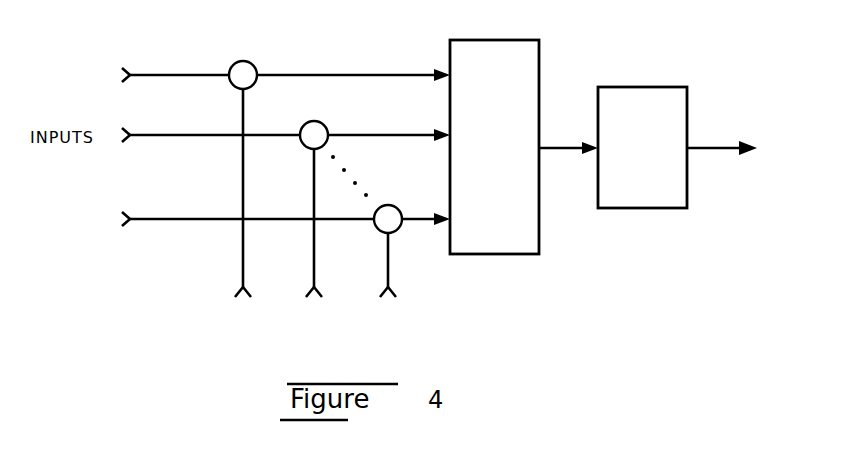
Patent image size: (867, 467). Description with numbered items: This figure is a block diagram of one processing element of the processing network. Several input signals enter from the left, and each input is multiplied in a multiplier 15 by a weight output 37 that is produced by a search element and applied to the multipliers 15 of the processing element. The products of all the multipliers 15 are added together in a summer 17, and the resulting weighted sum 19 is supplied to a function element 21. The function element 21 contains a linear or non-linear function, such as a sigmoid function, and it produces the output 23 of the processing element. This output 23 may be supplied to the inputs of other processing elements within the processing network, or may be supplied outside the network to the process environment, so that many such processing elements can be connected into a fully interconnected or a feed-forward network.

The multiplier 15 is at (250, 62).
The summer 17 is at (532, 42).
The weighted sum 19 is at (572, 146).
The function element 21 is at (658, 86).
The output 23 is at (710, 146).
The weight output 37 is at (362, 283).